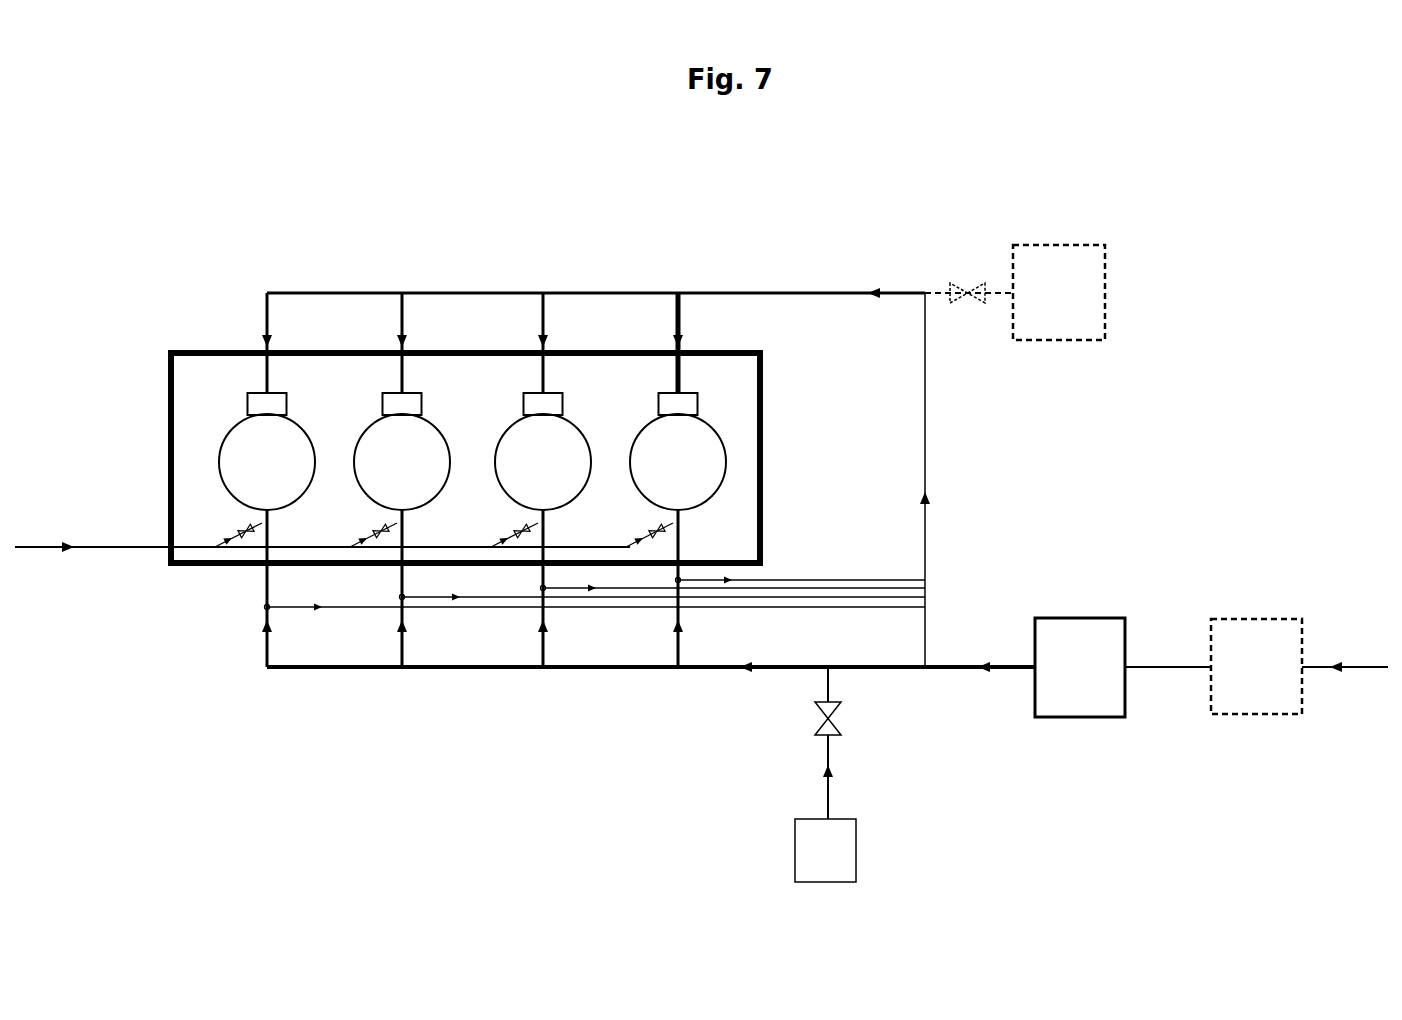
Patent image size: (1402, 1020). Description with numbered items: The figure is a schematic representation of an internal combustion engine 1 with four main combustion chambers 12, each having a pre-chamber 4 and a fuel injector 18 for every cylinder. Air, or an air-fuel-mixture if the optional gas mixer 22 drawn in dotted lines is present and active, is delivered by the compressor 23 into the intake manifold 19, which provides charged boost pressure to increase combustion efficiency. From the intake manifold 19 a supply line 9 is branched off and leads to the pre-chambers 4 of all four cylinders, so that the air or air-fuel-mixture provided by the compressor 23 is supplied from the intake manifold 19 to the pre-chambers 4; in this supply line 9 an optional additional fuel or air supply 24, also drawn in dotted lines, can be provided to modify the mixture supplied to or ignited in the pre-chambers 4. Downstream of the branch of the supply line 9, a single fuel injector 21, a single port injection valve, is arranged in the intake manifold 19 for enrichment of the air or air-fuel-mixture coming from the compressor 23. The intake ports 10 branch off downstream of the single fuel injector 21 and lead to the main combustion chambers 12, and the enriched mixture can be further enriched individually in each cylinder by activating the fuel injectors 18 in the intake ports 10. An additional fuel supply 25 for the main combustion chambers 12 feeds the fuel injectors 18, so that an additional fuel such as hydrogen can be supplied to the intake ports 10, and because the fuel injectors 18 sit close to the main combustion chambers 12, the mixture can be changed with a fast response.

The internal combustion engine 1 is at (100, 200).
The pre-chamber 4 is at (267, 407).
The supply line 9 is at (750, 290).
The intake port 10 is at (398, 634).
The combustion chamber 12 is at (252, 476).
The fuel injector 18 is at (245, 528).
The intake manifold 19 is at (945, 670).
The single fuel injector 21 is at (811, 863).
The gas mixer 22 is at (1241, 680).
The compressor 23 is at (1065, 680).
The additional fuel or air supply for the pre-chamber 24 is at (1044, 308).
The additional fuel supply for the main combustion chamber 25 is at (80, 545).